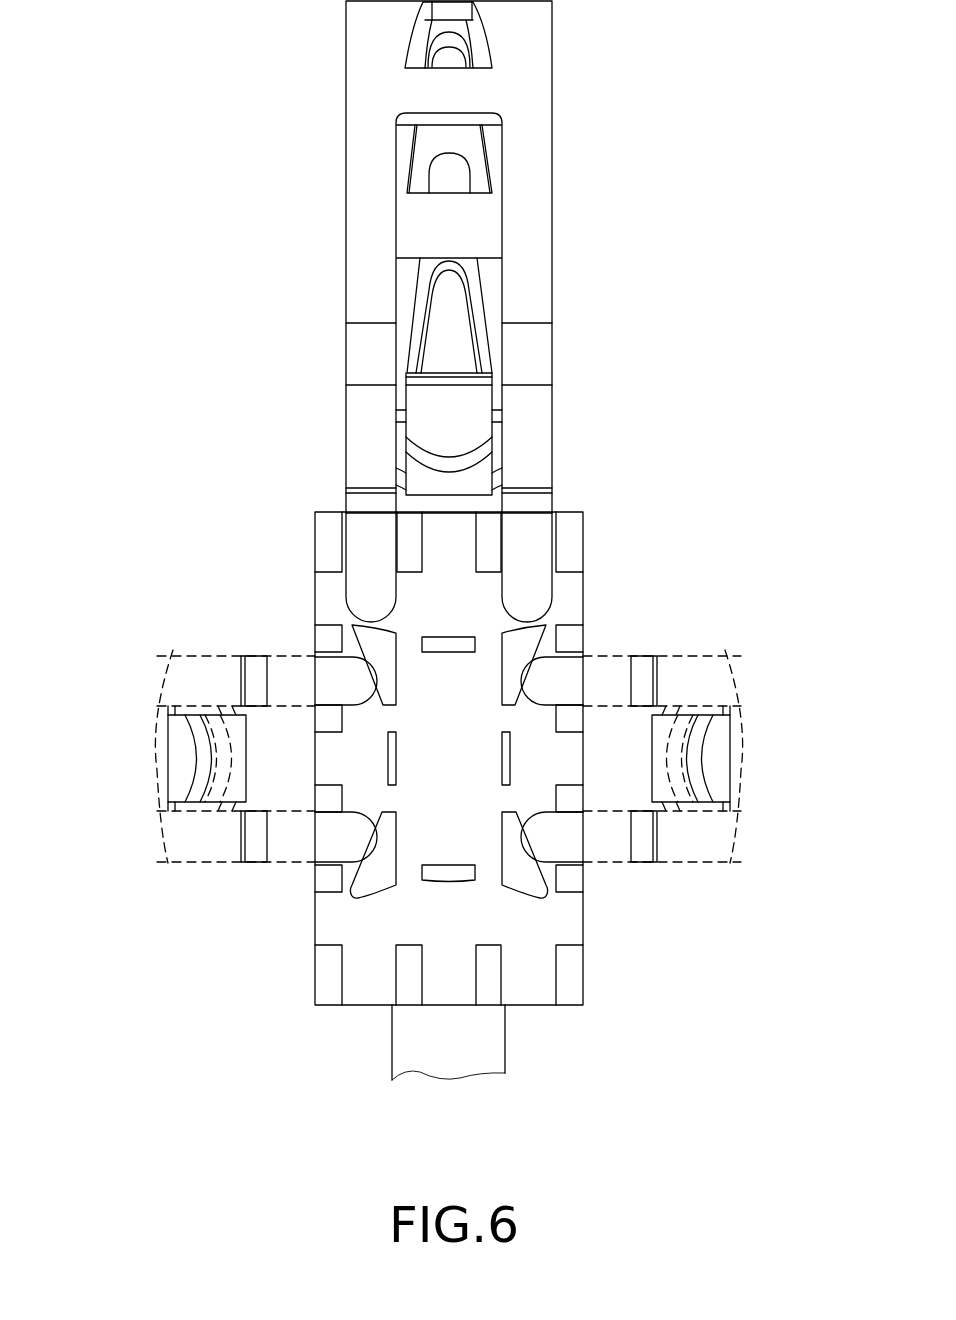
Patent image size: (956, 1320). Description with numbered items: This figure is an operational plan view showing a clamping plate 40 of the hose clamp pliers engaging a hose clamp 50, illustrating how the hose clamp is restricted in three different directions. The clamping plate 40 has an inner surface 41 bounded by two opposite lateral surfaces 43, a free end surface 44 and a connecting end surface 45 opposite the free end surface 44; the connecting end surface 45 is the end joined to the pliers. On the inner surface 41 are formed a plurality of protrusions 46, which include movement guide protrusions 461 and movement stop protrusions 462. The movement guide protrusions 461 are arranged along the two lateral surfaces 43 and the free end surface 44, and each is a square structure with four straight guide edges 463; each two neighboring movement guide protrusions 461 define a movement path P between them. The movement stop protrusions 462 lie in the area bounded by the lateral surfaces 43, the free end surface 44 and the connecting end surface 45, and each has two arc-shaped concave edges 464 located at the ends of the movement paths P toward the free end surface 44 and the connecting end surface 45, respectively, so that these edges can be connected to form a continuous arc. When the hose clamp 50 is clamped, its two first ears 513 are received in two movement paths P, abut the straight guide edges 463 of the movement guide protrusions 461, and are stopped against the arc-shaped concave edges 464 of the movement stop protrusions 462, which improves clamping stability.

The hose clamp 50 is at (552, 86).
The clamping plate 40 is at (313, 556).
The inner surface 41 is at (325, 600).
The lateral surface 43 is at (583, 595).
The free end surface 44 is at (332, 512).
The connecting end surface 45 is at (530, 1005).
The protrusions 46 is at (377, 884).
The movement guide protrusion 461 is at (327, 875).
The movement stop protrusion 462 is at (377, 887).
The straight guide edge 463 is at (502, 543).
The arc-shaped concave edge 464 is at (504, 628).
The first ear 513 is at (527, 593).
The movement path P is at (343, 535).